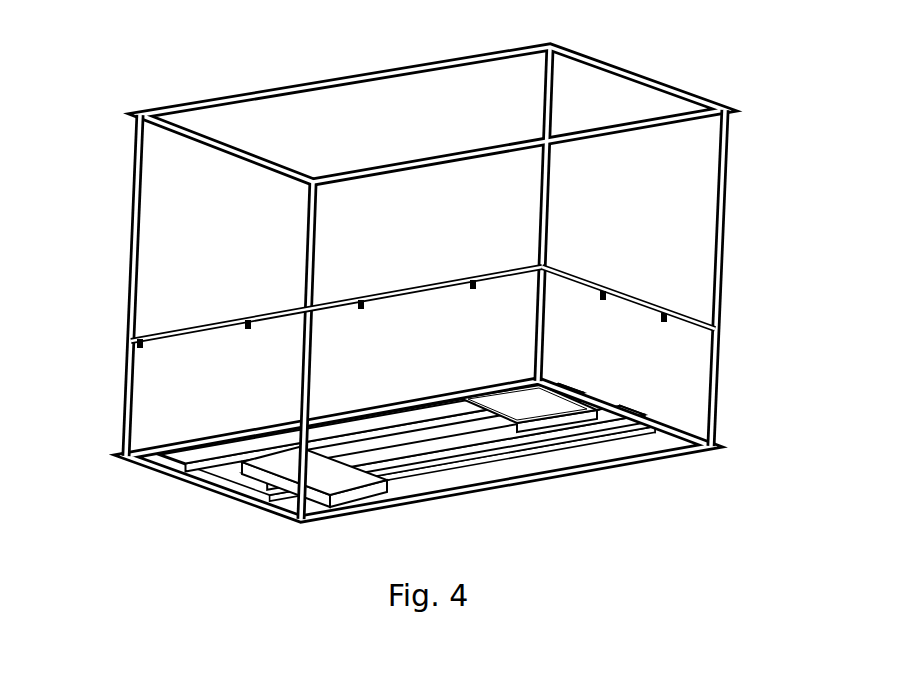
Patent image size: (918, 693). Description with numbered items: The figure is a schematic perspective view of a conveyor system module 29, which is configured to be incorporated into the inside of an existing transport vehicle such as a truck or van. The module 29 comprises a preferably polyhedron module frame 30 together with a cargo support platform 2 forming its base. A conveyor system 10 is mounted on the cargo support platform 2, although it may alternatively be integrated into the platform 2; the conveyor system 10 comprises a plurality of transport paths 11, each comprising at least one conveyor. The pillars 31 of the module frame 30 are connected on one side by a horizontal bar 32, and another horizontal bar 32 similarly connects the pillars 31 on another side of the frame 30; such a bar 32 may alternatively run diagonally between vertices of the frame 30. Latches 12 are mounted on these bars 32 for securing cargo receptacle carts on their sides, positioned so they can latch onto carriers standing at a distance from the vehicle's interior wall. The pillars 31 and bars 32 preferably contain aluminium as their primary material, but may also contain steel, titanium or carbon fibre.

The cargo support platform 2 is at (237, 486).
The conveyor system 10 is at (660, 410).
The transport paths 11 is at (530, 392).
The latches 12 is at (545, 268).
The conveyor system module 29 is at (674, 70).
The module frame 30 is at (728, 152).
The pillars 31 is at (137, 165).
The horizontal bar 32 is at (205, 320).